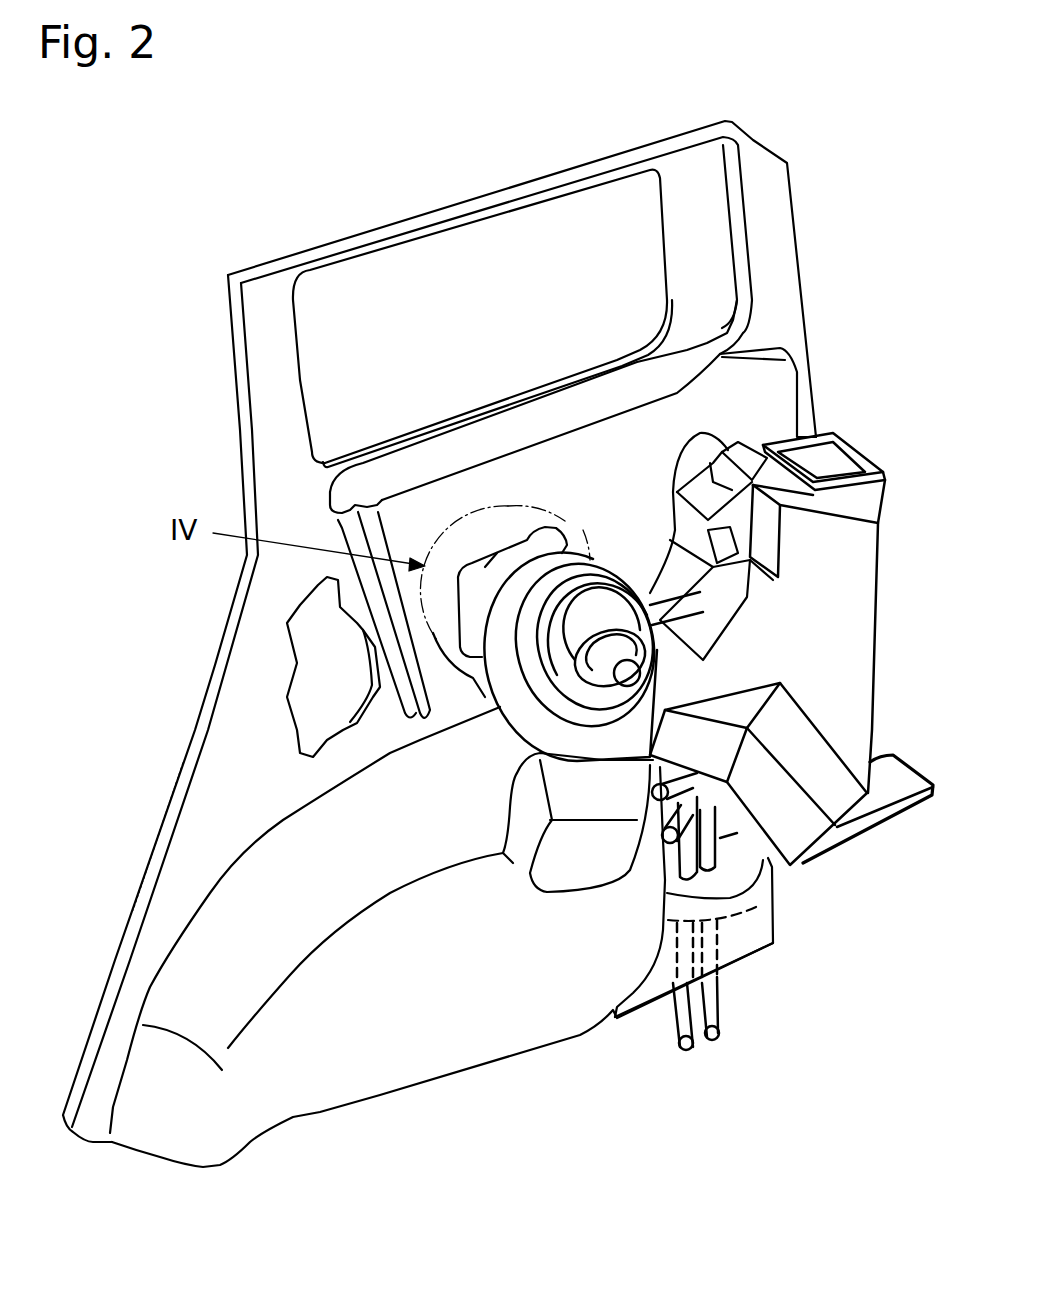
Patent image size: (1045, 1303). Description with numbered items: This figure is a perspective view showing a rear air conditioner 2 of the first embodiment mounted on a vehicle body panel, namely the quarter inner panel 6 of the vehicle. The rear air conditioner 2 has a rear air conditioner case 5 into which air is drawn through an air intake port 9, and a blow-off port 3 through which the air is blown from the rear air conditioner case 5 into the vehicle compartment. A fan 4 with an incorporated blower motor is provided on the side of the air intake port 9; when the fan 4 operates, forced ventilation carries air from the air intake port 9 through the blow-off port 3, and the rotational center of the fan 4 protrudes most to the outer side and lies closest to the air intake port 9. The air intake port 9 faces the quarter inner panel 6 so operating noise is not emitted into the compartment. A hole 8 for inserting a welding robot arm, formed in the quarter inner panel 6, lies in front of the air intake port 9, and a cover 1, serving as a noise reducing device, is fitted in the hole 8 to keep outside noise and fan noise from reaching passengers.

The cover 1 is at (473, 600).
The rear air conditioner 2 is at (813, 860).
The blow-off port 3 is at (842, 463).
The fan 4 is at (740, 613).
The rear air conditioner case 5 is at (853, 643).
The quarter inner panel 6 is at (790, 274).
The hole 8 is at (493, 563).
The air intake port 9 is at (542, 508).